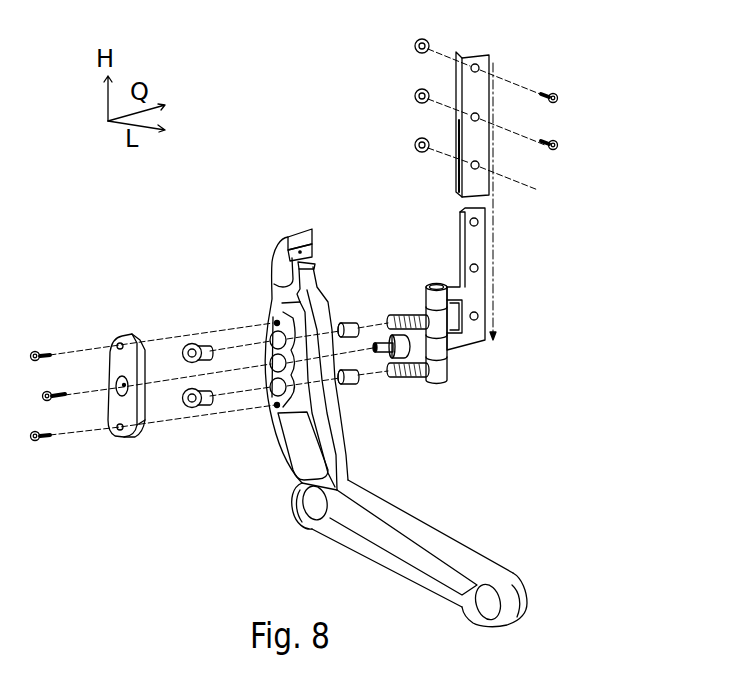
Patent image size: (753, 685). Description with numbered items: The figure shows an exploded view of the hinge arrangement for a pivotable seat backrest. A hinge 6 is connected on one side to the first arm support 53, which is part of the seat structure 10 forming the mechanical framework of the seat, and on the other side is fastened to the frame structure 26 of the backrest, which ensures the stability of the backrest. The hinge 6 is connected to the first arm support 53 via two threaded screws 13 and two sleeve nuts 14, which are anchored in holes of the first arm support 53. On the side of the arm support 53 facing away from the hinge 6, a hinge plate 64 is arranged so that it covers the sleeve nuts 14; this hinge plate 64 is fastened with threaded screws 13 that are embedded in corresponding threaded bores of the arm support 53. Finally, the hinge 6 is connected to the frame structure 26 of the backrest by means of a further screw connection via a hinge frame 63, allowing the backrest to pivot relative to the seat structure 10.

The hinge 6 is at (445, 325).
The seat structure 10 is at (418, 546).
The threaded screws 13 is at (42, 352).
The sleeve nuts 14 is at (418, 95).
The frame structure 26 is at (483, 62).
The first arm support 53 is at (317, 393).
The hinge frame 63 is at (468, 247).
The hinge plate 64 is at (127, 420).